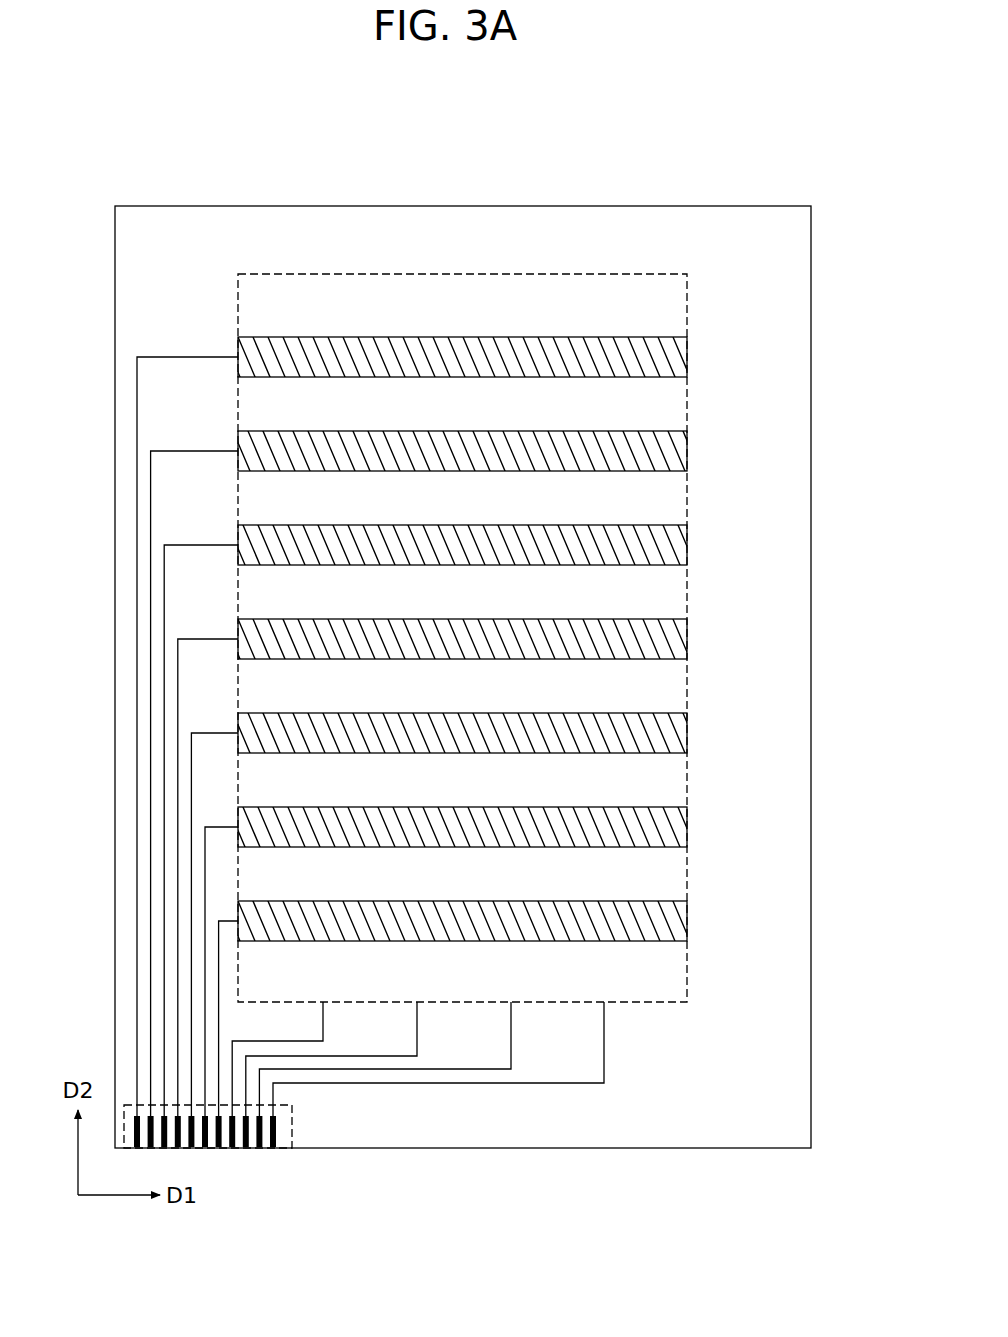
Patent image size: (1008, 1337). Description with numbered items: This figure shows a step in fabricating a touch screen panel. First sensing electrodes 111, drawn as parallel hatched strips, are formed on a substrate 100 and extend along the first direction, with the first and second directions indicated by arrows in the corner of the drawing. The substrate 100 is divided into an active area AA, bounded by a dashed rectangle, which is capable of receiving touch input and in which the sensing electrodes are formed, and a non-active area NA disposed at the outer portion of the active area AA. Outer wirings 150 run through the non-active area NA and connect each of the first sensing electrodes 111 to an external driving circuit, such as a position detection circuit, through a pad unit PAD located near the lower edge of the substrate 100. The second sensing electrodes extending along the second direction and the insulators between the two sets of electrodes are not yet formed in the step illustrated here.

The substrate 100 is at (757, 222).
The first sensing electrodes 111 is at (396, 352).
The outer wirings 150 is at (137, 528).
The active area AA is at (687, 396).
The non-active area NA is at (797, 513).
The pad unit PAD is at (292, 1127).